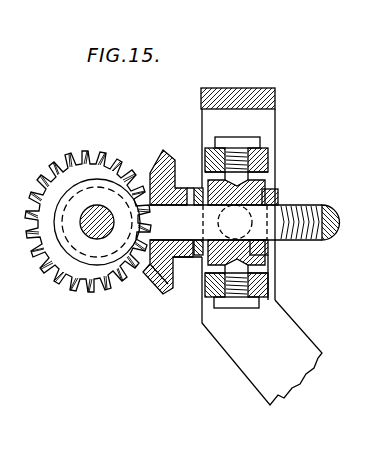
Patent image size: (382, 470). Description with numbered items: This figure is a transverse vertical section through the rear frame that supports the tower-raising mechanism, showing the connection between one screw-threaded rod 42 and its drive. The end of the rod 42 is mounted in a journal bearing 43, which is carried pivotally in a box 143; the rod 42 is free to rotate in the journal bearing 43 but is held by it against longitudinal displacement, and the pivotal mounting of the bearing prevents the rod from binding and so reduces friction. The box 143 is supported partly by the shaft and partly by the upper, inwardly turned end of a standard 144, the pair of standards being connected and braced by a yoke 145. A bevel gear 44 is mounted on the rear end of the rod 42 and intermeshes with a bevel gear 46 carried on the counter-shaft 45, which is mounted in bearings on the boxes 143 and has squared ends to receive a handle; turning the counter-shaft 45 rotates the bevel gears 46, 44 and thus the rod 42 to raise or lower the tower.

The screw-threaded rod 42 is at (305, 210).
The journal bearing 43 is at (275, 274).
The bevel gear 44 is at (165, 152).
The counter-shaft 45 is at (92, 238).
The bevel gear 46 is at (57, 162).
The box 143 is at (198, 300).
The standard 144 is at (255, 353).
The yoke 145 is at (245, 98).